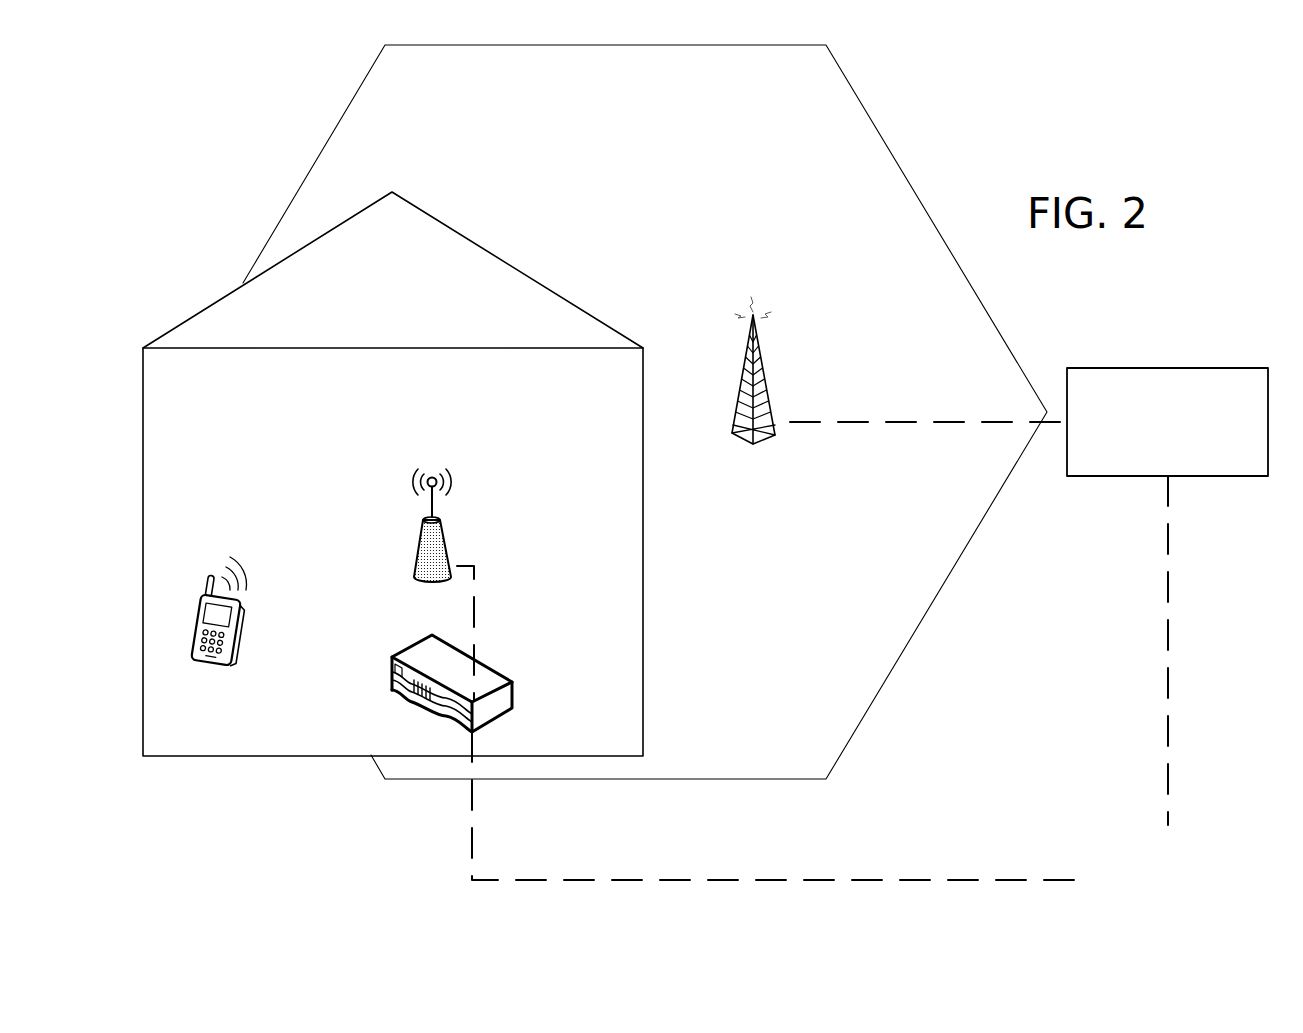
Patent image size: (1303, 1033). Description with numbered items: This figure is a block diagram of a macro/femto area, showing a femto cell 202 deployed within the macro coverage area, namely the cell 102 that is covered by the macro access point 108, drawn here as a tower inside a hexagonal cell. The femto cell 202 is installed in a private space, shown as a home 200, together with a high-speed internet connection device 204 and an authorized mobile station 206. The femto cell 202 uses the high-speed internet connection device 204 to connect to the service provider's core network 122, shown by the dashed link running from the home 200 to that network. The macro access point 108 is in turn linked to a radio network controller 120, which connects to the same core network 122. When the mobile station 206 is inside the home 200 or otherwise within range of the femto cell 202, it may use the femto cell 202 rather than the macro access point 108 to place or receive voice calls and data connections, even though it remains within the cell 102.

The macro cell area 102 is at (340, 76).
The macro access point 108 is at (732, 434).
The radio network controller 120 is at (1167, 422).
The service provider's core network 122 is at (1138, 842).
The home 200 is at (273, 756).
The femto cell 202 is at (420, 578).
The high-speed internet connection device 204 is at (449, 688).
The mobile station 206 is at (197, 655).